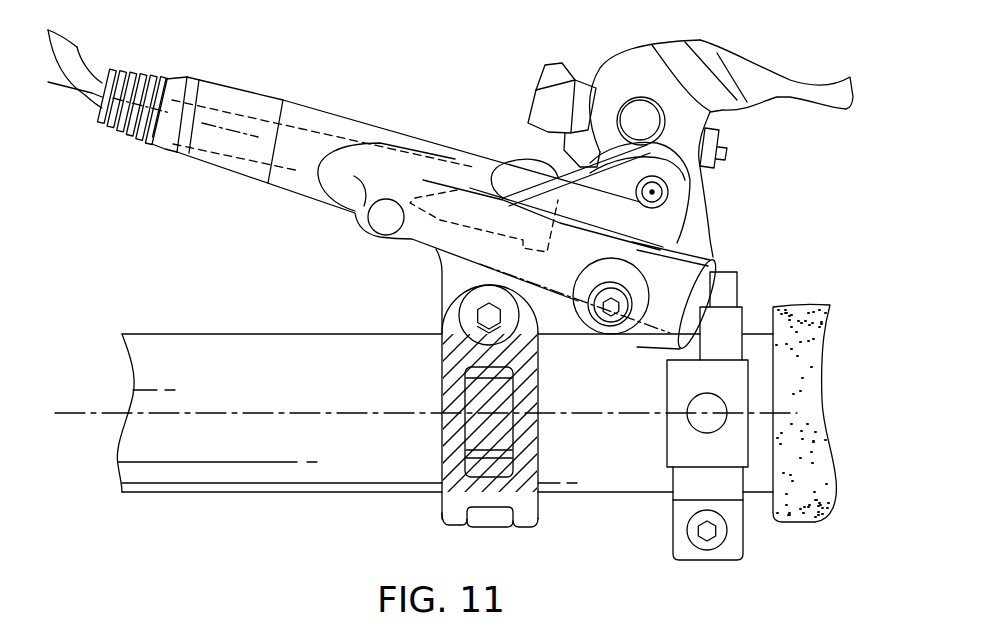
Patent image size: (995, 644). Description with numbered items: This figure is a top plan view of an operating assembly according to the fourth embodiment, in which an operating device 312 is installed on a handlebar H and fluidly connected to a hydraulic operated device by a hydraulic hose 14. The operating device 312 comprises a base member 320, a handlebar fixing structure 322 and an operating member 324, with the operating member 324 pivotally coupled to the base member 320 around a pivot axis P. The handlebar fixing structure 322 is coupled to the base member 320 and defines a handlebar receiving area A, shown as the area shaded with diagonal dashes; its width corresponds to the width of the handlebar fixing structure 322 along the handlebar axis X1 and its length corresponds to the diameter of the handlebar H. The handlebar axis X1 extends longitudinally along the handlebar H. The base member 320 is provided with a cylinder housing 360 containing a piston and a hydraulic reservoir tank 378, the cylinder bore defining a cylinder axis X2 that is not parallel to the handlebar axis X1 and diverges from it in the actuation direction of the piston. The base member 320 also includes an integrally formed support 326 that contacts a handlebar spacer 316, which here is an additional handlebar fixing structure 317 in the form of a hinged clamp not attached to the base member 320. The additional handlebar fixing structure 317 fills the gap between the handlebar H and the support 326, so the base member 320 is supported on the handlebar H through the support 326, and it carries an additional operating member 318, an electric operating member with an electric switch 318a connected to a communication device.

The hydraulic hose 14 is at (90, 70).
The cylinder axis X2 is at (227, 127).
The operating device 312 is at (433, 95).
The cylinder housing 360 is at (375, 125).
The base member 320 is at (559, 163).
The operating member 324 is at (783, 66).
The pivot axis P is at (654, 191).
The hydraulic reservoir tank 378 is at (410, 247).
The support 326 is at (727, 262).
The handlebar spacer 316 is at (749, 317).
The additional operating member 318 is at (660, 437).
The electric switch 318a is at (696, 405).
The additional handlebar fixing structure 317 is at (672, 478).
The handlebar fixing structure 322 is at (435, 517).
The handlebar receiving area A is at (497, 430).
The handlebar axis X1 is at (83, 413).
The handlebar H is at (175, 492).